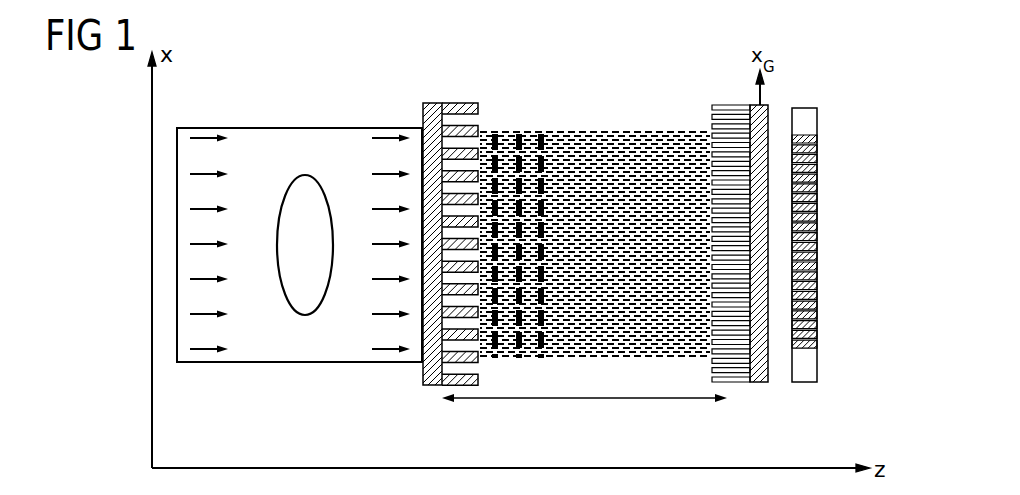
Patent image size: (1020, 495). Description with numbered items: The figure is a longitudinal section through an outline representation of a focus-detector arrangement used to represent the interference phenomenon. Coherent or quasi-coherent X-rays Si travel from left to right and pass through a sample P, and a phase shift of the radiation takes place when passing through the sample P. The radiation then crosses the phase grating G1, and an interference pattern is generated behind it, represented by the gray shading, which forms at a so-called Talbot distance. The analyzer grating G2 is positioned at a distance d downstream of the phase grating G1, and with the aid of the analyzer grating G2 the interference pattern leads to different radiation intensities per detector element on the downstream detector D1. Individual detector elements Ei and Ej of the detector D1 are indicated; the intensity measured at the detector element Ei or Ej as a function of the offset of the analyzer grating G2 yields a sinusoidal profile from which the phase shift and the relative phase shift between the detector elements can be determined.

The X-ray Si is at (200, 138).
The sample P is at (305, 175).
The phase grating G1 is at (450, 103).
The analyzer grating G2 is at (725, 105).
The detector D1 is at (838, 198).
The detector element Ei is at (818, 148).
The detector element Ej is at (817, 283).
The distance d is at (573, 400).